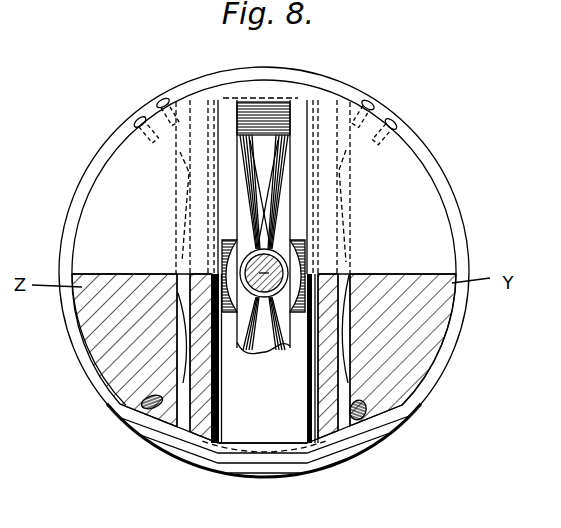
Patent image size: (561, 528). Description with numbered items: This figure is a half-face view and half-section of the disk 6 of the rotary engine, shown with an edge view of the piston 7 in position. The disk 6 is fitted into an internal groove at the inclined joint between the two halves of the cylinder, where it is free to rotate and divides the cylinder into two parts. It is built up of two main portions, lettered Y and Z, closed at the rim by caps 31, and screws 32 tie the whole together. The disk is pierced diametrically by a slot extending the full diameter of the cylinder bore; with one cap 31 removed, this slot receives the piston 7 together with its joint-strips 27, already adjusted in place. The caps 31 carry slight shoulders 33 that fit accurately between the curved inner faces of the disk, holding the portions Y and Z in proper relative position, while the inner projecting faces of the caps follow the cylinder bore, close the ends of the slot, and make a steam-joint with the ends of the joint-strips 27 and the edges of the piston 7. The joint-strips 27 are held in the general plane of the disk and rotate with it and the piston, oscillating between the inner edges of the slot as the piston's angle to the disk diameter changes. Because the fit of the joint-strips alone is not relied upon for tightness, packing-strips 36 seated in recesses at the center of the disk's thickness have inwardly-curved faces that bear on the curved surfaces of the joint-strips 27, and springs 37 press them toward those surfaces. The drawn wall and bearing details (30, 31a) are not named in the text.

The disk 6 is at (264, 322).
The piston 7 is at (265, 122).
The joint-strips 27 is at (223, 328).
The wall 30 is at (214, 344).
The caps 31 is at (218, 80).
The bearing 31a is at (222, 265).
The screws 32 is at (265, 97).
The shoulders 33 is at (198, 462).
The packing-strips 36 is at (140, 435).
The springs 37 is at (177, 300).